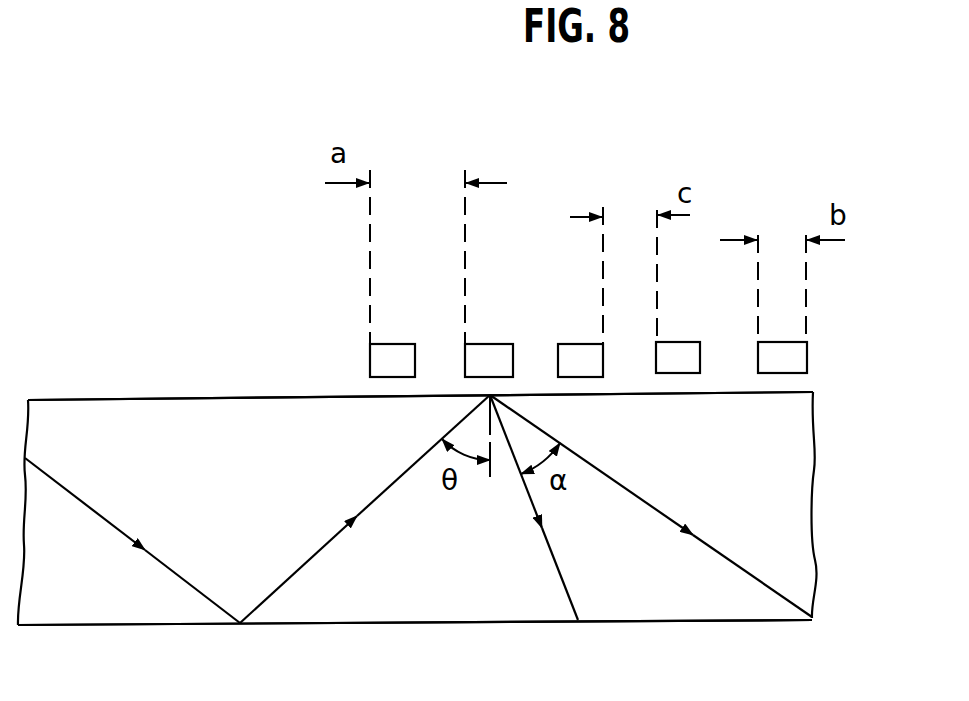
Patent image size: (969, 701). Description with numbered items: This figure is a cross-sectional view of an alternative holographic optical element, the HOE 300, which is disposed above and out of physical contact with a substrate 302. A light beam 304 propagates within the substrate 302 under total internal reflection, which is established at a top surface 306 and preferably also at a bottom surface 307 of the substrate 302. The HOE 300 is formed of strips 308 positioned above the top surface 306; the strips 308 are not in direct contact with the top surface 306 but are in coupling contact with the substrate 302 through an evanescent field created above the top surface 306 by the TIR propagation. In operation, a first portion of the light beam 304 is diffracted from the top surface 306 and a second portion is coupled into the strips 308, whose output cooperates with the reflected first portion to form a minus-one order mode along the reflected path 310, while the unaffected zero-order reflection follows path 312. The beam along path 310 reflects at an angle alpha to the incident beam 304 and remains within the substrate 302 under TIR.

The HOE 300 is at (274, 185).
The substrate 302 is at (815, 597).
The light beam 304 is at (292, 578).
The top surface 306 is at (88, 400).
The bottom surface 307 is at (112, 627).
The strips 308 is at (370, 356).
The reflected path 310 is at (565, 585).
The unaffected reflection path 312 is at (636, 494).